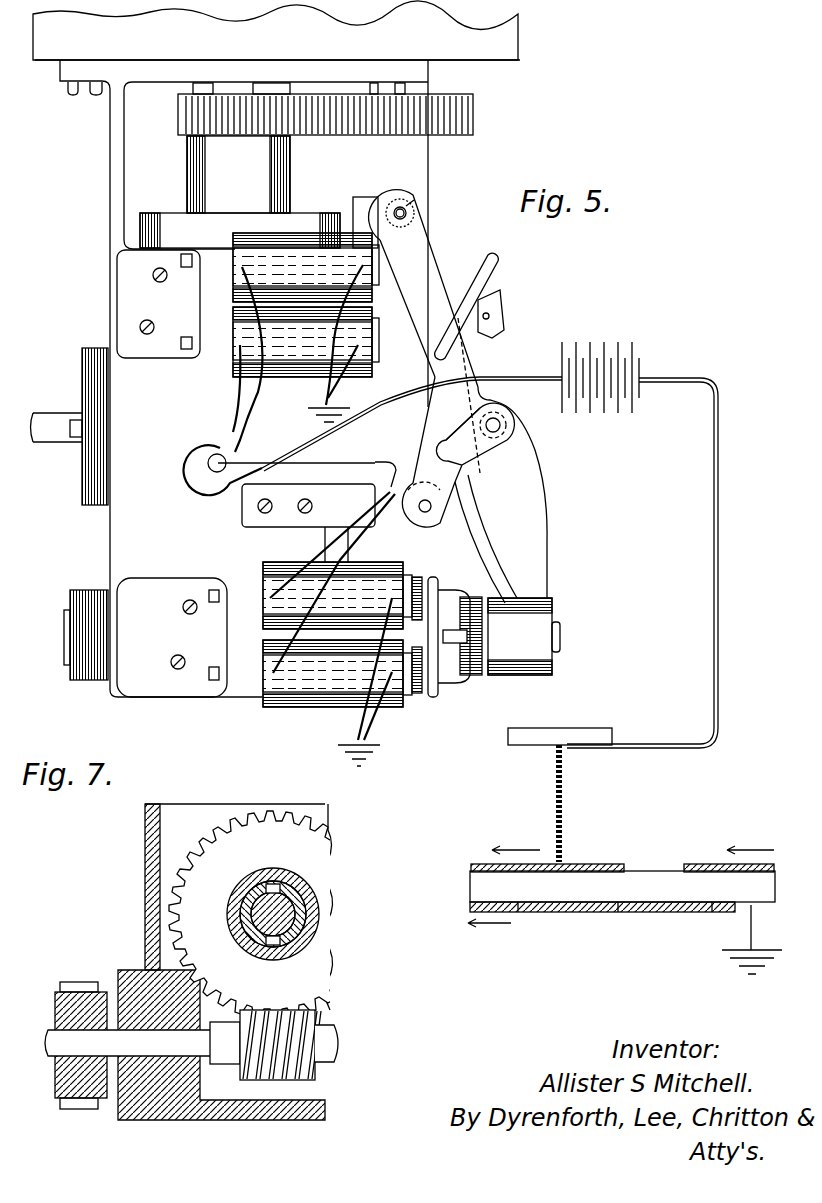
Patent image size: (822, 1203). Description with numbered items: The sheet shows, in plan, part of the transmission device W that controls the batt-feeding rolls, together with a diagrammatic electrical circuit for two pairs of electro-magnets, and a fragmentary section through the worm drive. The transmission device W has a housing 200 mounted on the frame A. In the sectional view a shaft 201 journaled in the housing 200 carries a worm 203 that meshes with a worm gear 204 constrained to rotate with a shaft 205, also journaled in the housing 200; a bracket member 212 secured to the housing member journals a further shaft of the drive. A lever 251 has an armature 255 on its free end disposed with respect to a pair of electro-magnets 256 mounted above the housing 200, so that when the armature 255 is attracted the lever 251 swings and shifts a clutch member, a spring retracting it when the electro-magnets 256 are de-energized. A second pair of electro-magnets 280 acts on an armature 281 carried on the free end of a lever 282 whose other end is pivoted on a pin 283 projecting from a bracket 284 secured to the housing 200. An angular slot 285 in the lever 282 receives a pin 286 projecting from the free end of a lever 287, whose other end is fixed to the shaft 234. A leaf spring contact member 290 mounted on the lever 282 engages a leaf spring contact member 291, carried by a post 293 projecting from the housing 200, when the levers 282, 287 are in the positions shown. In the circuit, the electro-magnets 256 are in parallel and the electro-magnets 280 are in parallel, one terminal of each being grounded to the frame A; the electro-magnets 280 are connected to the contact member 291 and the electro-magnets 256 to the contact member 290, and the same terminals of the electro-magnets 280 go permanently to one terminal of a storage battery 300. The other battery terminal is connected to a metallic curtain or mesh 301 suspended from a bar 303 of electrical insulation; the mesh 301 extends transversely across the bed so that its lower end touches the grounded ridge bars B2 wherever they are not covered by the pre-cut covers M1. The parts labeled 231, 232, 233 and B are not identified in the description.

In FIG. 5, the frame A is at (520, 62).
In FIG. 5, the transmission device W is at (99, 262).
In FIG. 5, the bracket 231 is at (355, 205).
In FIG. 5, the pinion 232 is at (396, 200).
In FIG. 5, the ratchet teeth 233 is at (410, 198).
In FIG. 5, the shaft 234 is at (404, 213).
In FIG. 5, the housing 200 is at (432, 268).
In FIG. 5, the lever 287 is at (440, 280).
In FIG. 5, the armature 281 is at (480, 270).
In FIG. 5, the lever 282 is at (488, 343).
In FIG. 5, the storage battery 300 is at (605, 342).
In FIG. 5, the electro-magnets 280 is at (235, 285).
In FIG. 5, the pin 286 is at (505, 425).
In FIG. 5, the angular slot 285 is at (462, 440).
In FIG. 5, the pin 283 is at (435, 507).
In FIG. 5, the bracket member 212 is at (545, 558).
In FIG. 5, the leaf spring contact member 291 is at (320, 462).
In FIG. 5, the post 293 is at (213, 470).
In FIG. 5, the leaf spring contact member 290 is at (380, 470).
In FIG. 5, the bracket 284 is at (250, 520).
In FIG. 5, the electro-magnets 256 is at (263, 600).
In FIG. 5, the armature 255 is at (446, 660).
In FIG. 5, the lever 251 is at (472, 660).
In FIG. 5, the bar 303 is at (545, 736).
In FIG. 5, the metallic curtain or mesh 301 is at (565, 772).
In FIG. 5, the belt B is at (636, 895).
In FIG. 5, the pre-cut covers M1 is at (594, 865).
In FIG. 5, the ridge bars B2 is at (470, 892).
In FIG. 7, the worm gear 204 is at (322, 860).
In FIG. 7, the shaft 205 is at (298, 918).
In FIG. 7, the shaft 201 is at (55, 1040).
In FIG. 7, the worm 203 is at (325, 1020).